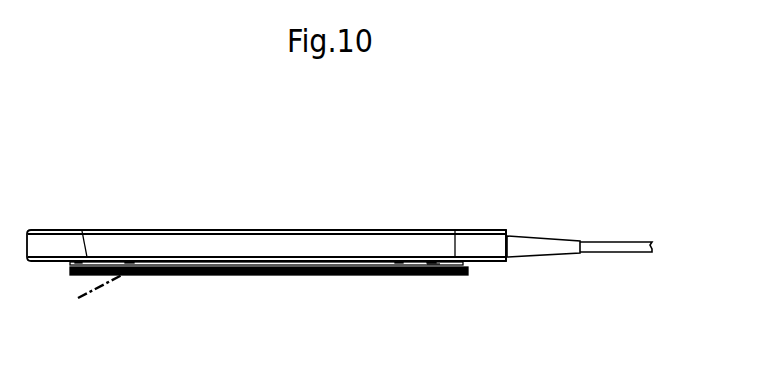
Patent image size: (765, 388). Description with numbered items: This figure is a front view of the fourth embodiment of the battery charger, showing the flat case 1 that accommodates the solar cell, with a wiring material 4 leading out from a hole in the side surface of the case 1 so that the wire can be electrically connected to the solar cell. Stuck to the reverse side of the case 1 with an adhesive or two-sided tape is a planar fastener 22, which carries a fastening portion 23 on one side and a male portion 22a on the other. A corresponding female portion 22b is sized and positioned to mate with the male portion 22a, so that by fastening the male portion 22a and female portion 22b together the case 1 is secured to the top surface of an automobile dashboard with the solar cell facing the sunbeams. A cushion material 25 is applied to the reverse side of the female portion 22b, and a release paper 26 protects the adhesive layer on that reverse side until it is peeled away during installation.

The case 1 is at (270, 250).
The wiring material 4 is at (612, 252).
The planar fastener 22 is at (398, 263).
The male portion 22a is at (126, 262).
The female portion 22b is at (432, 276).
The fastening portion 23 is at (82, 231).
The cushion material 25 is at (233, 276).
The release paper 26 is at (118, 278).